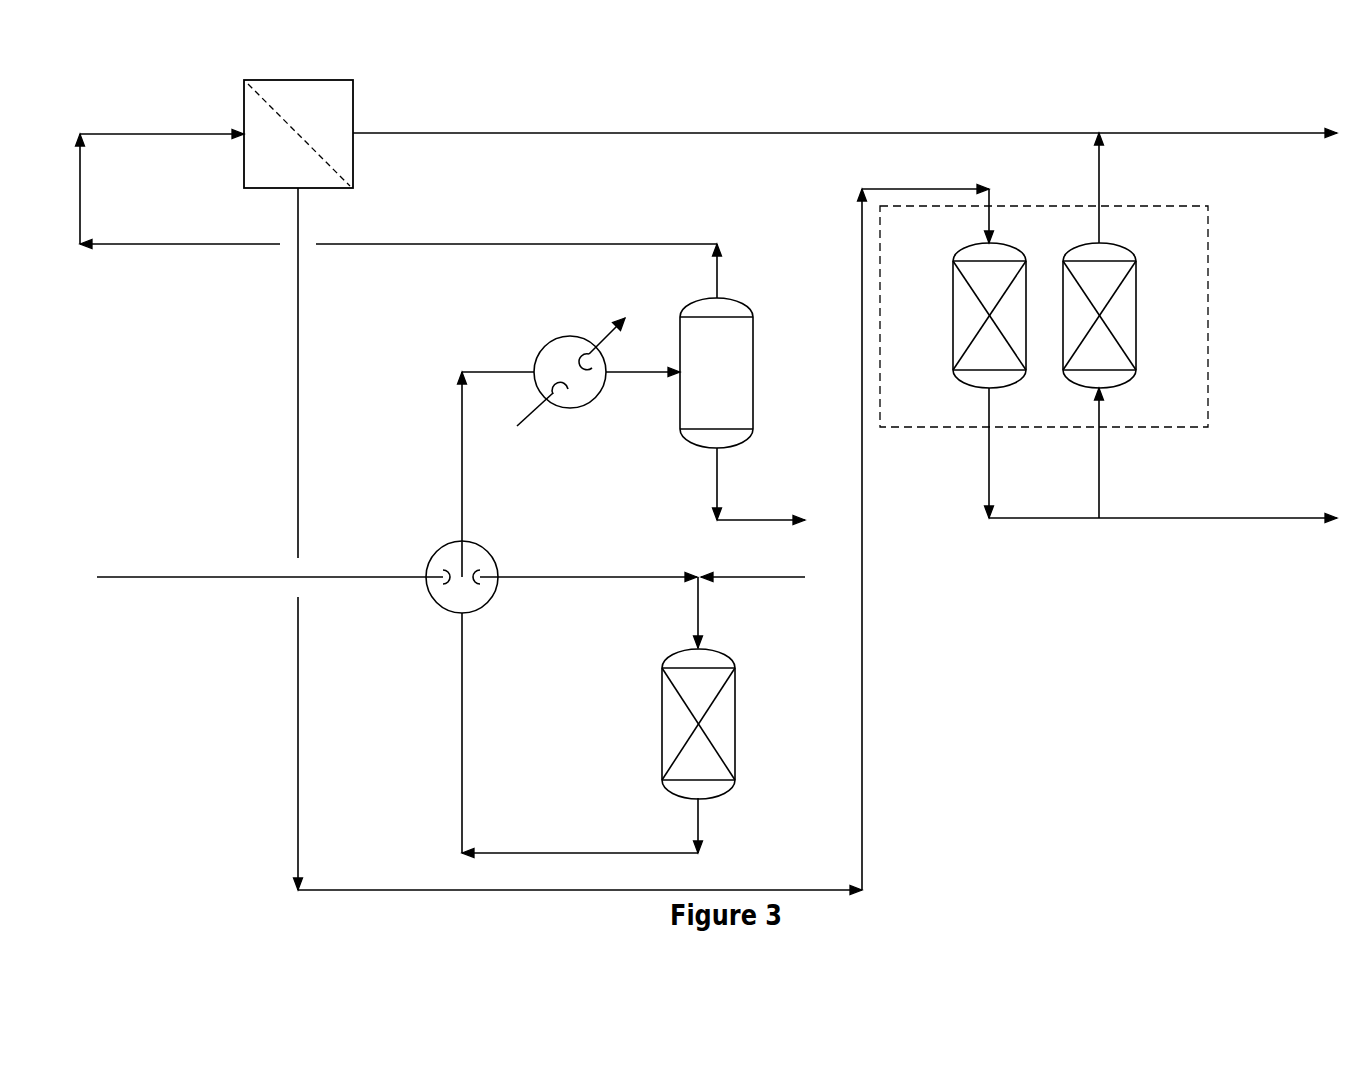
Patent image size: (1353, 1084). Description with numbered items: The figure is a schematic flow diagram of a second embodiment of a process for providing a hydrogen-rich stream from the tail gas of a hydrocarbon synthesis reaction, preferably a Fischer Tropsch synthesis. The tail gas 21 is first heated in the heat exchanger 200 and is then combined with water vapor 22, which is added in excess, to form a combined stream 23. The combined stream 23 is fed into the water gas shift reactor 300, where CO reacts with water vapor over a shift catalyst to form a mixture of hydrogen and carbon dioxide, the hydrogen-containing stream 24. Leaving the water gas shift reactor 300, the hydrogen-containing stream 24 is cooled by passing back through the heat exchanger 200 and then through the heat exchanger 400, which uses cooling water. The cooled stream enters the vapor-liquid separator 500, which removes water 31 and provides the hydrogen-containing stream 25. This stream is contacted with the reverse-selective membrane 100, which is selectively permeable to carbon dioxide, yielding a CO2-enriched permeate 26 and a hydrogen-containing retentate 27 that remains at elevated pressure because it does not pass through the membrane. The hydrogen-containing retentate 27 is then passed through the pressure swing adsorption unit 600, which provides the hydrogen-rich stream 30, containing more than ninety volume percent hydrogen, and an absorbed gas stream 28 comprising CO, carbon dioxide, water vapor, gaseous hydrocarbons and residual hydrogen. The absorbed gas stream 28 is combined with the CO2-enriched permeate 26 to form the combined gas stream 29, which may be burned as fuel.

The tail gas 21 is at (270, 563).
The water vapor 22 is at (753, 566).
The combined stream 23 is at (591, 611).
The hydrogen-containing stream 24 is at (582, 735).
The hydrogen-containing stream 25 is at (399, 203).
The CO2-enriched permeate 26 is at (726, 119).
The hydrogen-containing retentate 27 is at (644, 540).
The absorbed gas stream 28 is at (1081, 188).
The combined gas stream 29 is at (1218, 121).
The hydrogen-rich stream 30 is at (1161, 455).
The water 31 is at (759, 486).
The reverse-selective membrane 100 is at (328, 152).
The heat exchanger 200 is at (481, 585).
The water gas shift reactor 300 is at (727, 732).
The heat exchanger 400 is at (569, 447).
The vapor-liquid separator 500 is at (745, 380).
The pressure swing adsorption unit 600 is at (1072, 333).